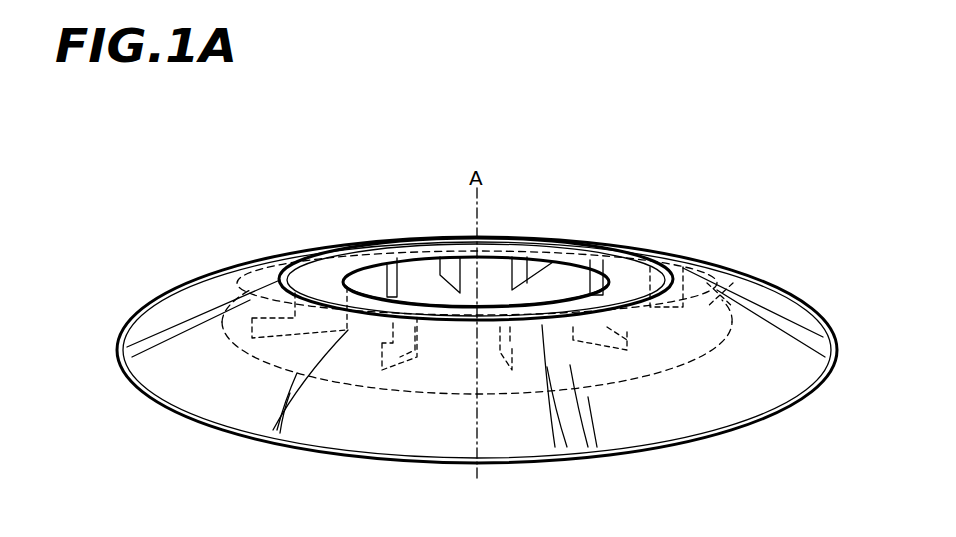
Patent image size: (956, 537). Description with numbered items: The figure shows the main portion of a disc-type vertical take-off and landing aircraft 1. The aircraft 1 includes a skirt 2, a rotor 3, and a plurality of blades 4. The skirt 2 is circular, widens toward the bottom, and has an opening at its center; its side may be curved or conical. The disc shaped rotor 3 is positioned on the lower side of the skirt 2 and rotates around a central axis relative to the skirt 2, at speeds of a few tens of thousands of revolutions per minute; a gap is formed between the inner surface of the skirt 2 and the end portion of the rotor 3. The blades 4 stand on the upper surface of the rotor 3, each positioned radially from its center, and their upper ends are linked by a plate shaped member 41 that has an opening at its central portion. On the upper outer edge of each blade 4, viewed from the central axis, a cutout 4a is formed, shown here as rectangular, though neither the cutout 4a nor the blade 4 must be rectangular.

The disc-type vertical take-off and landing aircraft 1 is at (788, 265).
The skirt 2 is at (168, 306).
The rotor 3 is at (720, 282).
The blades 4 is at (615, 258).
The cutout 4a is at (272, 318).
The plate shaped member 41 is at (313, 272).